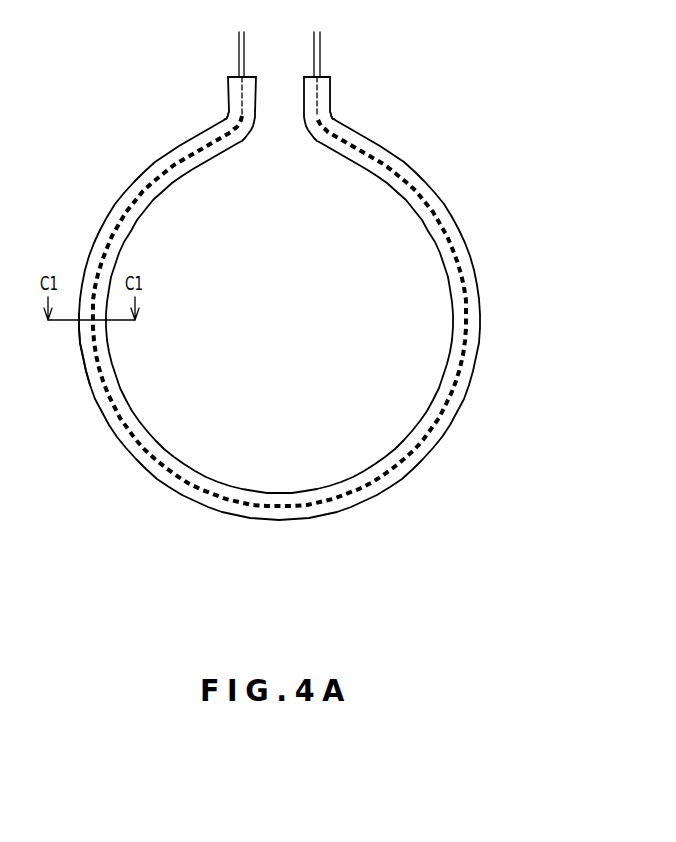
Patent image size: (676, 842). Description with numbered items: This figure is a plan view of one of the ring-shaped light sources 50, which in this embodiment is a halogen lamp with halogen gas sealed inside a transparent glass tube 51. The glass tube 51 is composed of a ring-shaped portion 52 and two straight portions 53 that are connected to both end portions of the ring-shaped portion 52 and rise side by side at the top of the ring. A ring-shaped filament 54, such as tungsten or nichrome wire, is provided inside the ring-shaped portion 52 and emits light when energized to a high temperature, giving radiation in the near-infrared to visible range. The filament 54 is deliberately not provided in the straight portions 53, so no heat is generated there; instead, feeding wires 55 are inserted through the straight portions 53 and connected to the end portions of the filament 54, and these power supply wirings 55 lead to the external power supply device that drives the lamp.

The ring-shaped light source 50 is at (329, 285).
The transparent glass tube 51 is at (452, 212).
The ring-shaped portion 52 is at (477, 268).
The straight portions 53 is at (229, 95).
The ring-shaped filament 54 is at (150, 175).
The feeding wires 55 is at (239, 43).